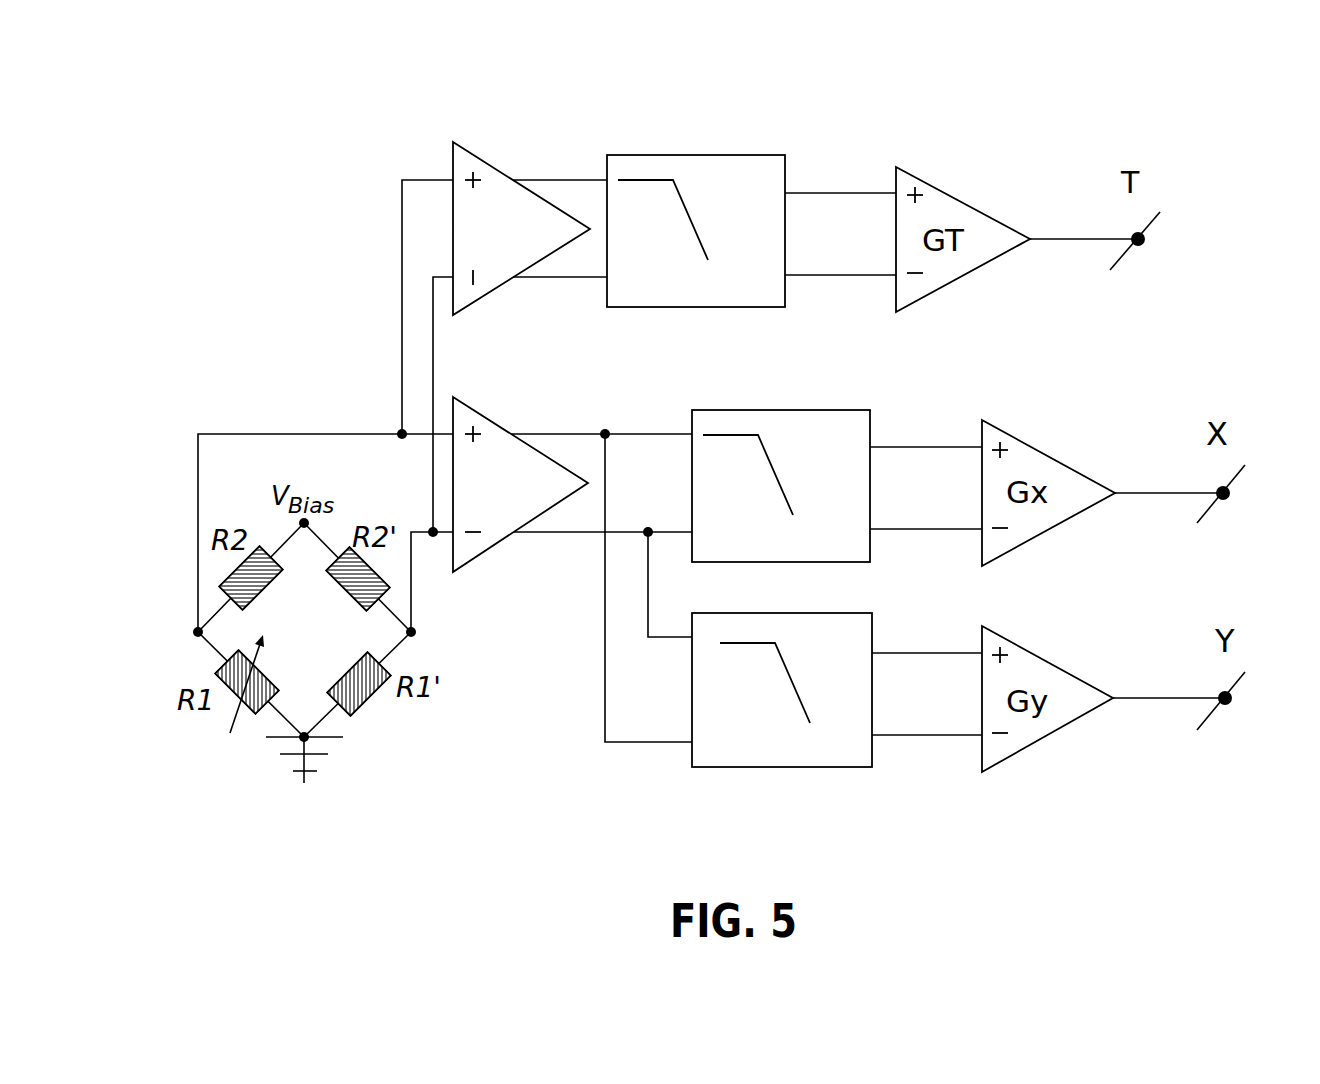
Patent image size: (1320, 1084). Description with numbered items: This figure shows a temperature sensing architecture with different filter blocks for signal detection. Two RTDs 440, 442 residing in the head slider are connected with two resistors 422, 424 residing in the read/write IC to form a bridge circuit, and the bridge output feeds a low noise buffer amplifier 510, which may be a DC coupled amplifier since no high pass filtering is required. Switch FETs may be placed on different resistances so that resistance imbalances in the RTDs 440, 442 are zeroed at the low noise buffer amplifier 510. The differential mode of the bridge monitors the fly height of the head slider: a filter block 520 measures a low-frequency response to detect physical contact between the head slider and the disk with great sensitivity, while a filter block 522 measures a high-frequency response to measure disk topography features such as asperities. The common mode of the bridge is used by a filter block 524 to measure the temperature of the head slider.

The resistor 422 is at (232, 578).
The resistor 424 is at (346, 550).
The RTD 440 is at (250, 710).
The RTD 442 is at (367, 697).
The low noise buffer amplifier 510 is at (500, 418).
The filter block 520 is at (773, 410).
The filter block 522 is at (830, 767).
The filter block 524 is at (688, 157).